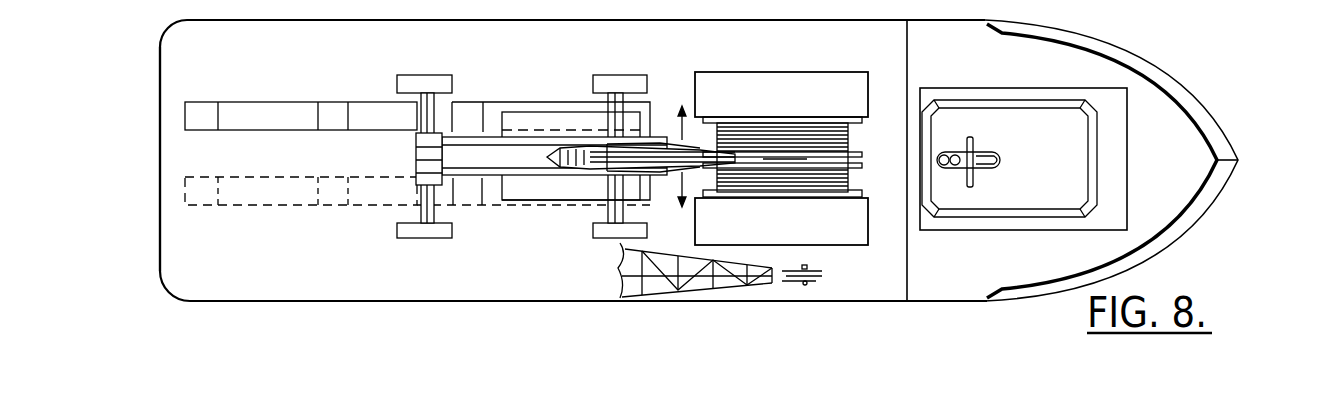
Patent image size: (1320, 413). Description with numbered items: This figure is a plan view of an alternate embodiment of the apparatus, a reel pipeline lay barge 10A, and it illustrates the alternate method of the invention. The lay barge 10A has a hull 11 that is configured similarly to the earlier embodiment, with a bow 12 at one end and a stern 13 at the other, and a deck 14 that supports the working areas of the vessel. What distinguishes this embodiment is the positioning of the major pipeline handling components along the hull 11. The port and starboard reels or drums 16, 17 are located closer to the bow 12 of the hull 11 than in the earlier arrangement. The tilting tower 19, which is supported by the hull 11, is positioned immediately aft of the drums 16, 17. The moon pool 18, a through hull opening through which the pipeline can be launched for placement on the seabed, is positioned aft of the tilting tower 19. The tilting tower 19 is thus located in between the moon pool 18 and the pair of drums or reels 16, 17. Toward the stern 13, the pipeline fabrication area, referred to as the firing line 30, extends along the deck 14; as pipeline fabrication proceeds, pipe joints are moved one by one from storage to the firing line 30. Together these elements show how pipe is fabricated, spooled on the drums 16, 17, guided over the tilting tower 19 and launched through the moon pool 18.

The reel pipeline lay barge 10A is at (484, 305).
The hull 11 is at (1190, 95).
The bow 12 is at (1240, 158).
The stern 13 is at (160, 147).
The deck 14 is at (377, 53).
The port drum 16 is at (815, 138).
The starboard drum 17 is at (770, 178).
The moon pool 18 is at (545, 132).
The tilting tower 19 is at (650, 150).
The firing line 30 is at (287, 106).